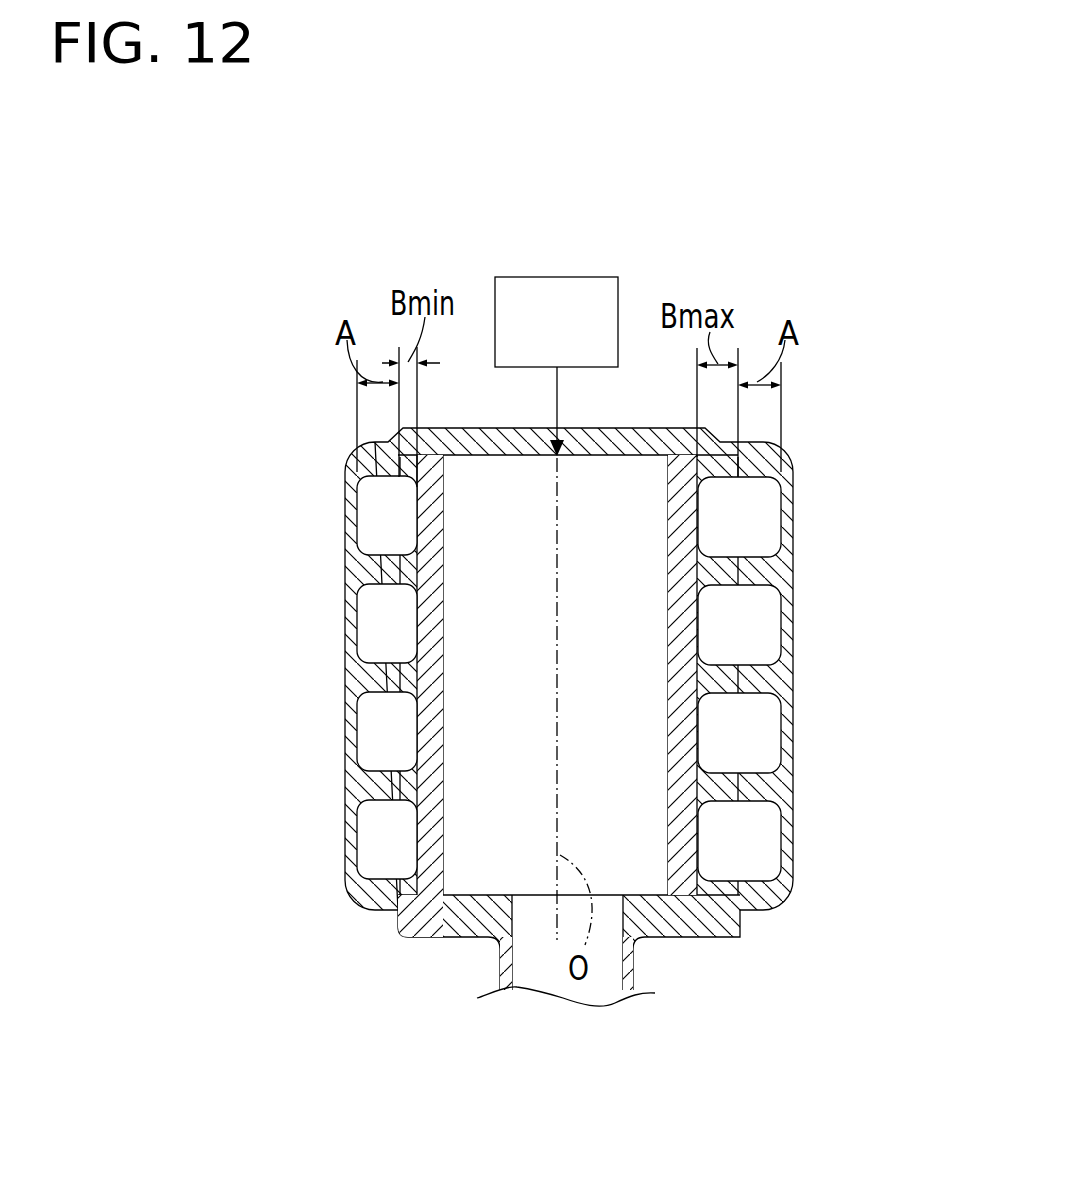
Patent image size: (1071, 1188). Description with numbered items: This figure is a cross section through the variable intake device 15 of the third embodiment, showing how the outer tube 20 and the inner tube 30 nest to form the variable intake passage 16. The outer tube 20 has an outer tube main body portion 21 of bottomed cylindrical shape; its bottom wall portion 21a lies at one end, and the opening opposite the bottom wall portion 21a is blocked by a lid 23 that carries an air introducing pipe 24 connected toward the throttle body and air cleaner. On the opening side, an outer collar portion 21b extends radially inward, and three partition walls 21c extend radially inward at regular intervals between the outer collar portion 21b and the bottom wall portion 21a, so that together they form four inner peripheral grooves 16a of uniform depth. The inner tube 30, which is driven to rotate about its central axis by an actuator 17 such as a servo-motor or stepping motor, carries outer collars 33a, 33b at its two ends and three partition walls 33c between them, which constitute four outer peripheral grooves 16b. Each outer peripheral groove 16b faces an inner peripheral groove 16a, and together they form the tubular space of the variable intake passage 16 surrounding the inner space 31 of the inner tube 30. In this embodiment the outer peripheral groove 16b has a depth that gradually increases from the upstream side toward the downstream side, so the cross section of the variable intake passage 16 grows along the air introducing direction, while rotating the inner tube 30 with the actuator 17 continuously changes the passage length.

The fuel filter assembly 15 is at (812, 505).
The variable intake passage 16 is at (722, 617).
The inner peripheral groove 16a is at (358, 532).
The outer peripheral groove 16b is at (414, 519).
The actuator 17 is at (560, 276).
The outer tube 20 is at (800, 590).
The outer tube main body portion 21 is at (783, 673).
The bottom wall portion 21a is at (622, 428).
The outer collar portion 21b is at (393, 890).
The partition wall 21c is at (370, 556).
The lid 23 is at (676, 947).
The air introducing pipe 24 is at (640, 972).
The inner tube 30 is at (424, 905).
The inner chamber 31 is at (506, 500).
The outer collar 33a is at (368, 478).
The outer collar 33b is at (412, 928).
The partition wall 33c is at (447, 596).